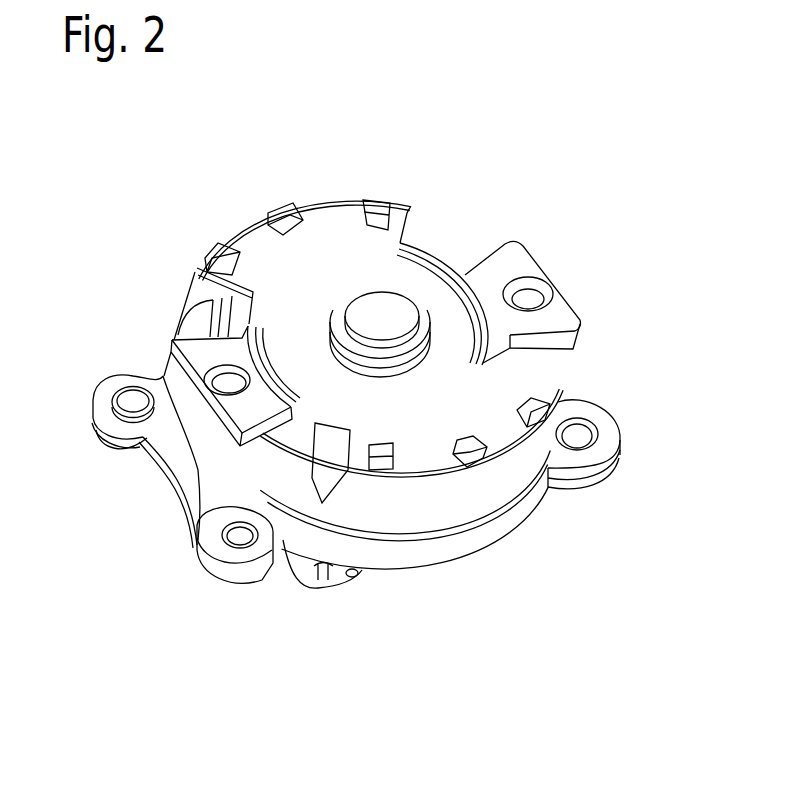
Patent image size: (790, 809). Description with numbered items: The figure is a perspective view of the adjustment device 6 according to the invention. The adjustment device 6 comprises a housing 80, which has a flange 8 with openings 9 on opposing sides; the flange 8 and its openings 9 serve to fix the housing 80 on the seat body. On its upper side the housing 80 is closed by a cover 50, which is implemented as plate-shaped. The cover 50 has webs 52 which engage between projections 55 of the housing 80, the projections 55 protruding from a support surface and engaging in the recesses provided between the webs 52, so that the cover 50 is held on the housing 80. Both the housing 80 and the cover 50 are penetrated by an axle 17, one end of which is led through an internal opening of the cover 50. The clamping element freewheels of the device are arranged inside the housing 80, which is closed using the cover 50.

The adjustment device 6 is at (576, 209).
The flange 8 is at (145, 425).
The openings 9 is at (131, 396).
The axle 17 is at (390, 322).
The cover 50 is at (353, 418).
The webs 52 is at (340, 212).
The projections 55 is at (282, 213).
The housing 80 is at (353, 532).